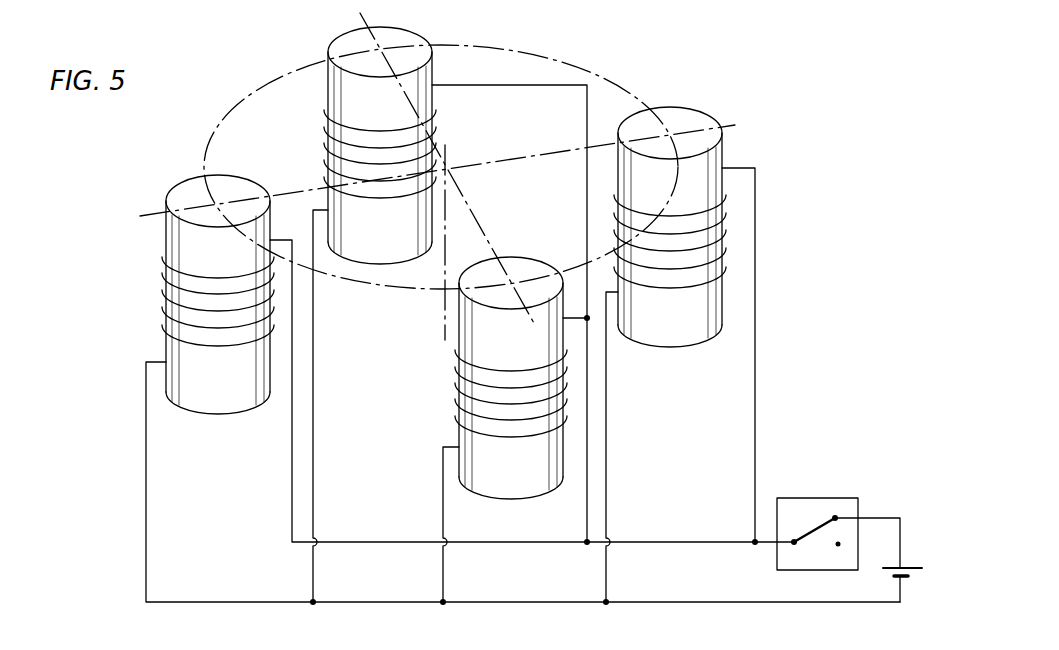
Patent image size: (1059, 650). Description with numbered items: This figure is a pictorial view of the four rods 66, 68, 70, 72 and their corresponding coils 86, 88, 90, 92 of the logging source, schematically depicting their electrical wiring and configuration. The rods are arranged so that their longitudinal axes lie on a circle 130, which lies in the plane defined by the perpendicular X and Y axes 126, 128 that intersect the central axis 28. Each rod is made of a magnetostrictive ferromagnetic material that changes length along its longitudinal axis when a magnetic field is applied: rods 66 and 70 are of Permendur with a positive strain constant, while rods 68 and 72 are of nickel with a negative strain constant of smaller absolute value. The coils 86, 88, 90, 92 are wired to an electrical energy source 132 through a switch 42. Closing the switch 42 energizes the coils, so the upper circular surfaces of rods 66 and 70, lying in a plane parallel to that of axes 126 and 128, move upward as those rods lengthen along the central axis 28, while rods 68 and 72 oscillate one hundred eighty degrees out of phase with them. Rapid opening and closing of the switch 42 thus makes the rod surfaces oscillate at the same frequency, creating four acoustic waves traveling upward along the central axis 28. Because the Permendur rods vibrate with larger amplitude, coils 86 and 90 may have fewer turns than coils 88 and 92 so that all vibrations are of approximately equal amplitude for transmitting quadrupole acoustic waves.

The central axis 28 is at (448, 187).
The switch 42 is at (813, 498).
The rod 66 is at (218, 403).
The rod 68 is at (527, 482).
The rod 70 is at (702, 228).
The rod 72 is at (420, 234).
The coil 86 is at (160, 253).
The coil 88 is at (455, 352).
The coil 90 is at (728, 248).
The coil 92 is at (438, 130).
The X axis 126 is at (725, 122).
The Y axis 128 is at (357, 14).
The circle 130 is at (605, 77).
The electrical energy source 132 is at (920, 571).